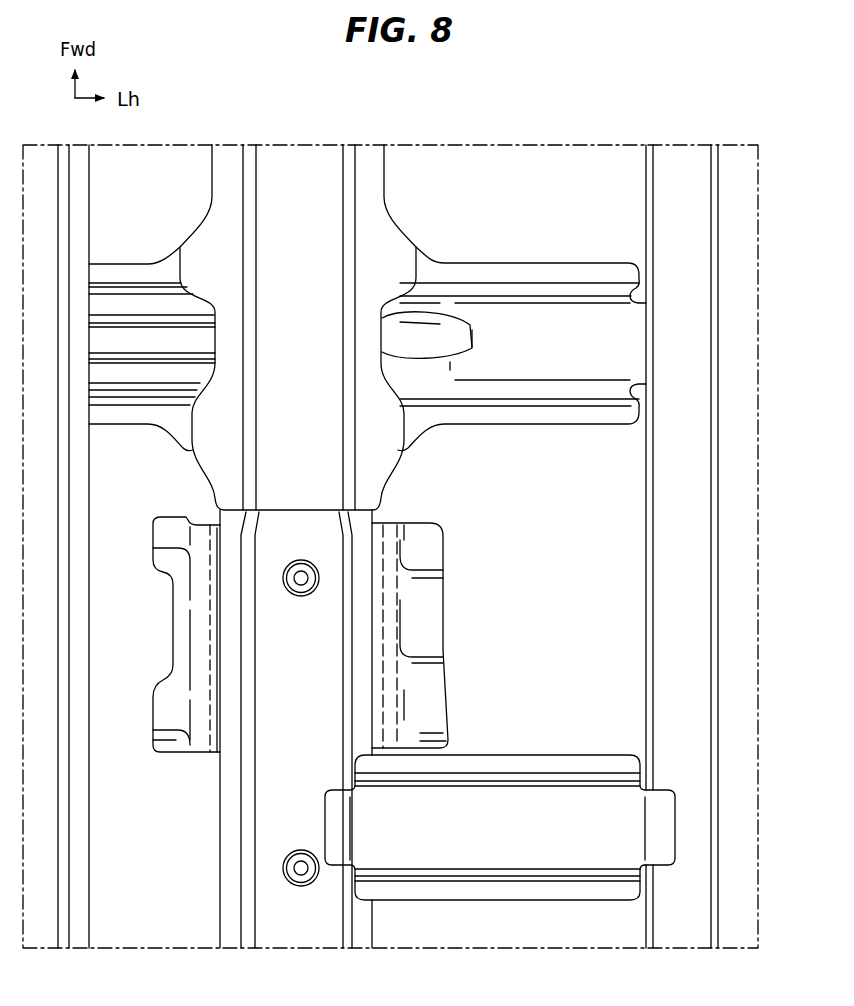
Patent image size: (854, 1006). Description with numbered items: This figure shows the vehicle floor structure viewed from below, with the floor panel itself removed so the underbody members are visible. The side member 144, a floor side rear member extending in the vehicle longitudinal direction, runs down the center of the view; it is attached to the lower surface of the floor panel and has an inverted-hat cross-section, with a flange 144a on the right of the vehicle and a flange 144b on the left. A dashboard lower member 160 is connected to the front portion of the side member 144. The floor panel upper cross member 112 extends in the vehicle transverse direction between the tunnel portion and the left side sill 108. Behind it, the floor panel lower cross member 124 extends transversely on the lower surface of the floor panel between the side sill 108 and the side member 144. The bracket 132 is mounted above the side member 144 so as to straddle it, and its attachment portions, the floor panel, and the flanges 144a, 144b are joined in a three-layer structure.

The side sill 108 is at (718, 207).
The floor panel upper cross member 112 is at (562, 325).
The floor panel lower cross member 124 is at (563, 845).
The bracket 132 is at (468, 550).
The side member 144 is at (323, 729).
The flange 144a is at (230, 829).
The flange 144b is at (357, 698).
The dashboard lower member 160 is at (310, 183).